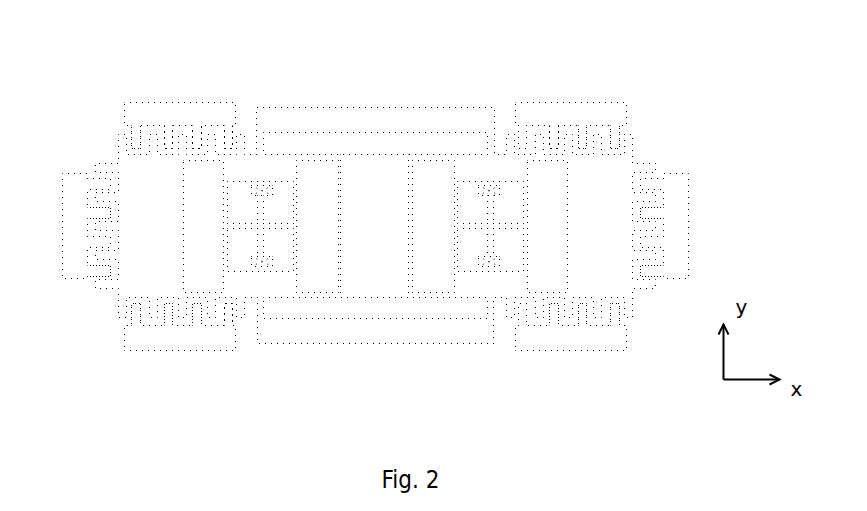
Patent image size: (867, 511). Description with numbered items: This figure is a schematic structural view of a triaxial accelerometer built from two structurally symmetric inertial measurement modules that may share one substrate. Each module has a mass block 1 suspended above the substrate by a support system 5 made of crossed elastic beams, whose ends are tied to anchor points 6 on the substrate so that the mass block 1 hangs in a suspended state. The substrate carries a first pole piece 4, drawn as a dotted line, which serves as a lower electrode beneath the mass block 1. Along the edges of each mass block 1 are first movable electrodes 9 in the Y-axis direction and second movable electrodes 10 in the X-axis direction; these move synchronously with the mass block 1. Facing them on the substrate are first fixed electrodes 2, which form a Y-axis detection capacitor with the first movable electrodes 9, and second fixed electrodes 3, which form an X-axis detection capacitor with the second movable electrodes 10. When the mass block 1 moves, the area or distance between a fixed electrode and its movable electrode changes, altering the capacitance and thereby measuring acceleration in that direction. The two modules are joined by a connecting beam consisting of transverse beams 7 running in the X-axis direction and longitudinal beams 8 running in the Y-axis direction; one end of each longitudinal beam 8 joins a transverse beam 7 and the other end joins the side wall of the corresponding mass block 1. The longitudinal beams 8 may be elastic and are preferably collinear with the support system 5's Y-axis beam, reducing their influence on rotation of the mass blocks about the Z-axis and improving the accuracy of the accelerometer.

The mass block 1 is at (137, 180).
The first fixed electrodes 2 is at (138, 110).
The second fixed electrodes 3 is at (77, 244).
The first pole piece 4 is at (212, 200).
The support system 5 is at (263, 231).
The anchor points 6 is at (253, 187).
The transverse beams 7 is at (398, 125).
The longitudinal beams 8 is at (265, 142).
The first movable electrodes 9 is at (155, 137).
The second movable electrodes 10 is at (94, 224).